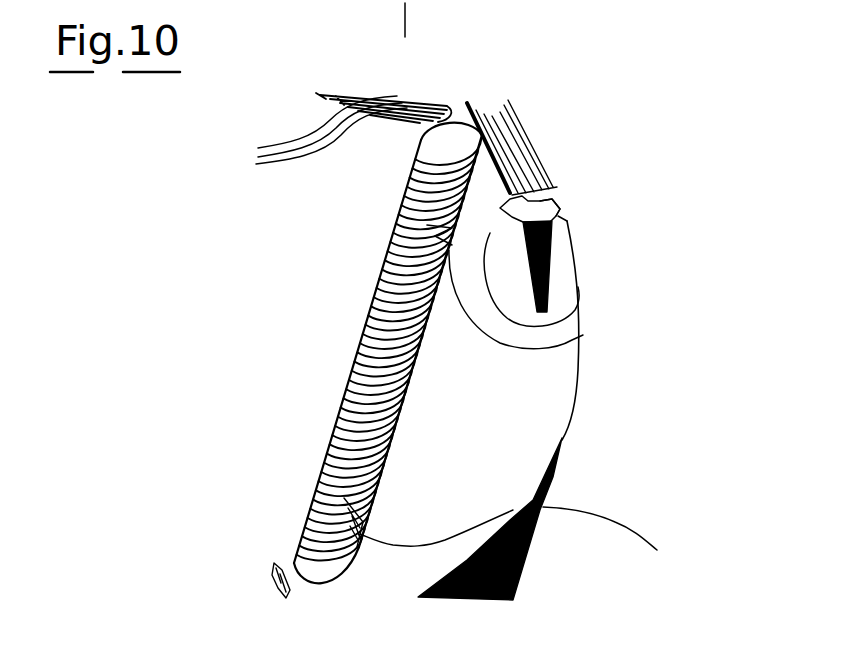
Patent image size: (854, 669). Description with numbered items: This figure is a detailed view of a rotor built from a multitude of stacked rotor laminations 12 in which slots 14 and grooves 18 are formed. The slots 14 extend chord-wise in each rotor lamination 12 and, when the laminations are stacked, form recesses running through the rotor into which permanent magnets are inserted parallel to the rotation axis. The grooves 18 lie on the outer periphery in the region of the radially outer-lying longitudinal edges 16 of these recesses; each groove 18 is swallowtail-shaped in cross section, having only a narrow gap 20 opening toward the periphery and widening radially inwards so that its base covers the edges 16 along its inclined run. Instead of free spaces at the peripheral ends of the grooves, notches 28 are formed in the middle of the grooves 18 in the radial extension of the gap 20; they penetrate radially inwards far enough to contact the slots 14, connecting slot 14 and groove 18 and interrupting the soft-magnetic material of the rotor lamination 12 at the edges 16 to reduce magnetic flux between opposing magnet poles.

The rotor lamination 12 is at (662, 400).
The slot 14 is at (357, 102).
The longitudinal edge 16 is at (446, 105).
The groove 18 is at (540, 206).
The gap 20 is at (555, 212).
The notch 28 is at (523, 327).